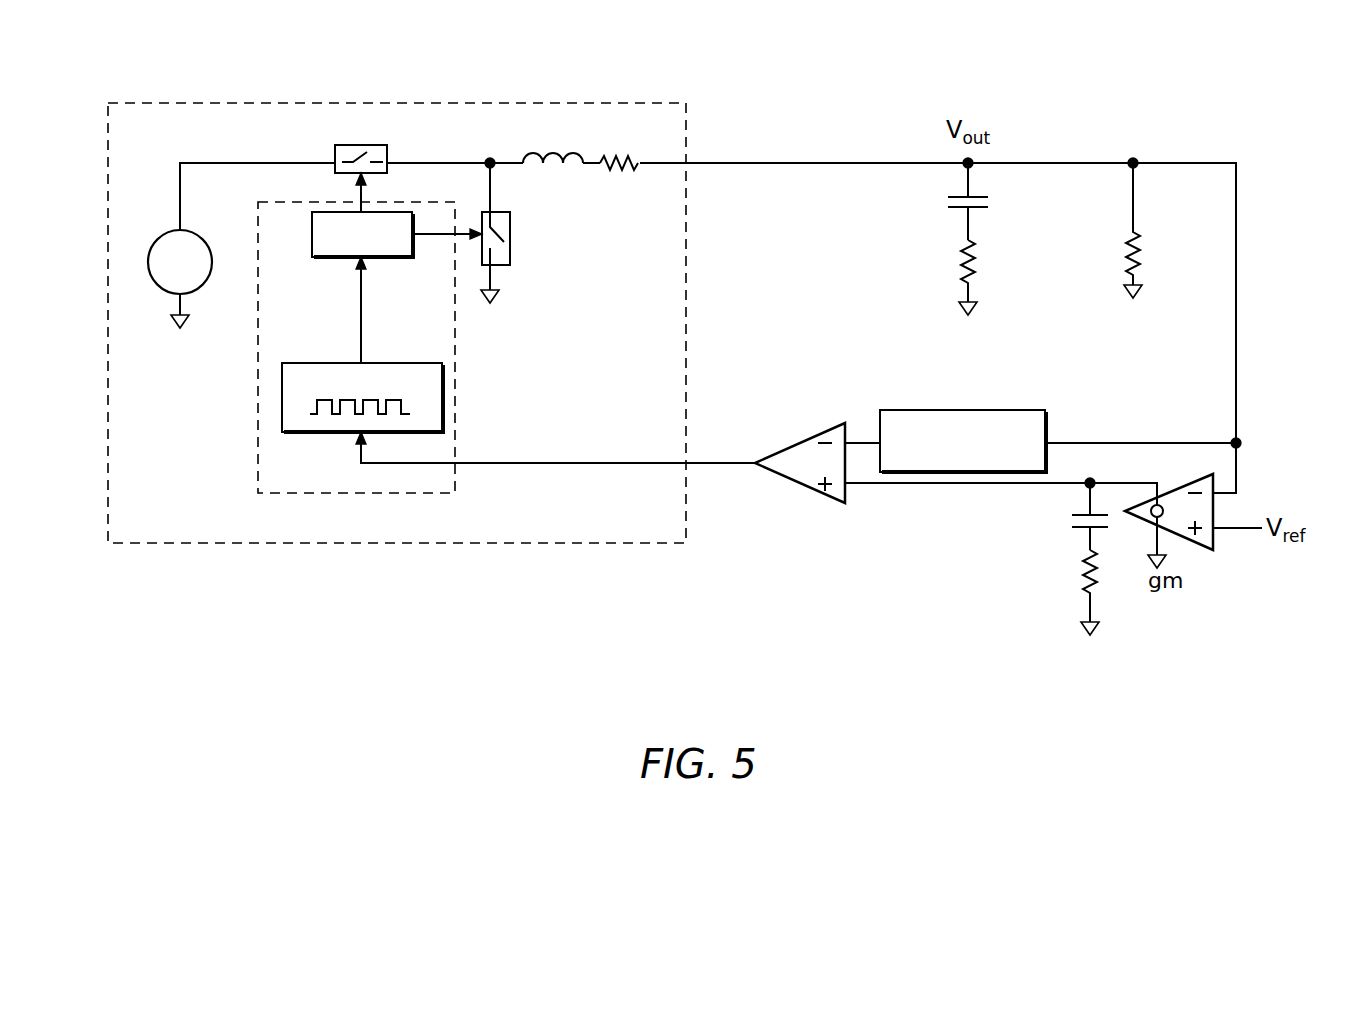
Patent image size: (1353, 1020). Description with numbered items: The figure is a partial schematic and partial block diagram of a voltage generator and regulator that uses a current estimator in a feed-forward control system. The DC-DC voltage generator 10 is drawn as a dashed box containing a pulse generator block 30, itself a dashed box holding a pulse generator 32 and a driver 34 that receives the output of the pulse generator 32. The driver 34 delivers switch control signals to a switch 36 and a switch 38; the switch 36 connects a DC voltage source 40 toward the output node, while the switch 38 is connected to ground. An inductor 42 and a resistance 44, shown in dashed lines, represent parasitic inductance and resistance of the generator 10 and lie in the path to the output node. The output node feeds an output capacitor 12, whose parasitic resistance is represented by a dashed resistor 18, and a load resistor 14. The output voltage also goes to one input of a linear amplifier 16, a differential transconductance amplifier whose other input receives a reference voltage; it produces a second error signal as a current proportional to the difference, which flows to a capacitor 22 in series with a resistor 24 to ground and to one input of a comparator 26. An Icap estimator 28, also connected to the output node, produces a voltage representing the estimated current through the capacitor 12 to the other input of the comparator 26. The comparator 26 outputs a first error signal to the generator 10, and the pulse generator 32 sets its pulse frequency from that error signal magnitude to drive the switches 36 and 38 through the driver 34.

The DC-DC voltage generator 10 is at (244, 543).
The output capacitor 12 is at (985, 197).
The load resistor 14 is at (1140, 235).
The linear amplifier 16 is at (1198, 548).
The resistor 18 is at (978, 250).
The capacitor 22 is at (1105, 527).
The resistor 24 is at (1100, 580).
The comparator 26 is at (787, 483).
The Icap estimator 28 is at (1000, 410).
The pulse generator block 30 is at (298, 494).
The pulse generator 32 is at (338, 363).
The driver 34 is at (336, 258).
The switch 36 is at (338, 146).
The switch 38 is at (510, 245).
The DC voltage source 40 is at (192, 294).
The inductor 42 is at (553, 173).
The resistance 44 is at (628, 178).